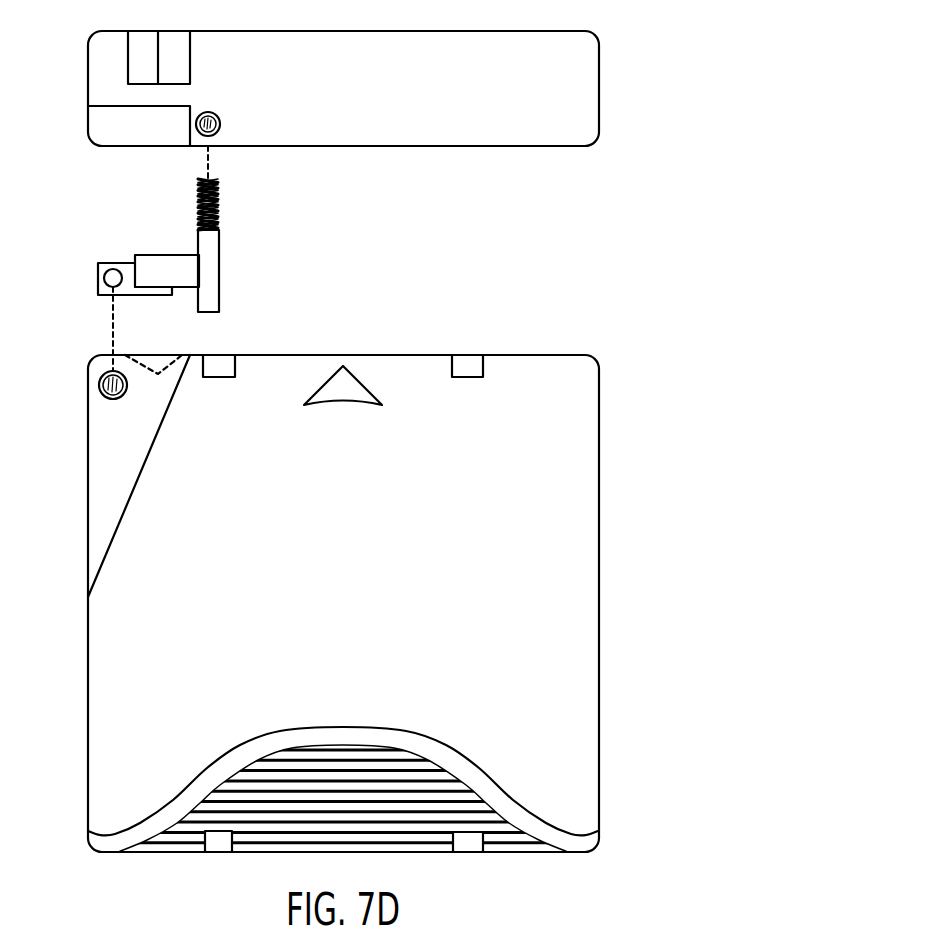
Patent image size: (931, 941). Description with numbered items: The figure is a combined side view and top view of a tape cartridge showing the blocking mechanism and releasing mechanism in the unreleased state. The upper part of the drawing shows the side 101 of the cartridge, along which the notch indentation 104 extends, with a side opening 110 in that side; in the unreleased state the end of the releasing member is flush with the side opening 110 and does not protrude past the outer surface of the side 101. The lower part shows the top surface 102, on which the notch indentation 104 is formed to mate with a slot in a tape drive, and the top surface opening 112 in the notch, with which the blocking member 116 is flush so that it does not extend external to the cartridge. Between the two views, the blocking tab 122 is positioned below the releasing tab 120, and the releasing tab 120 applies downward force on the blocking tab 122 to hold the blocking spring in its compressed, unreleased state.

The side 101 is at (105, 62).
The top surface 102 is at (100, 633).
The notch indentation 104 is at (105, 129).
The side opening 110 is at (222, 123).
The top surface opening 112 is at (99, 384).
The blocking member 116 is at (104, 279).
The releasing tab 120 is at (167, 255).
The blocking tab 122 is at (113, 258).